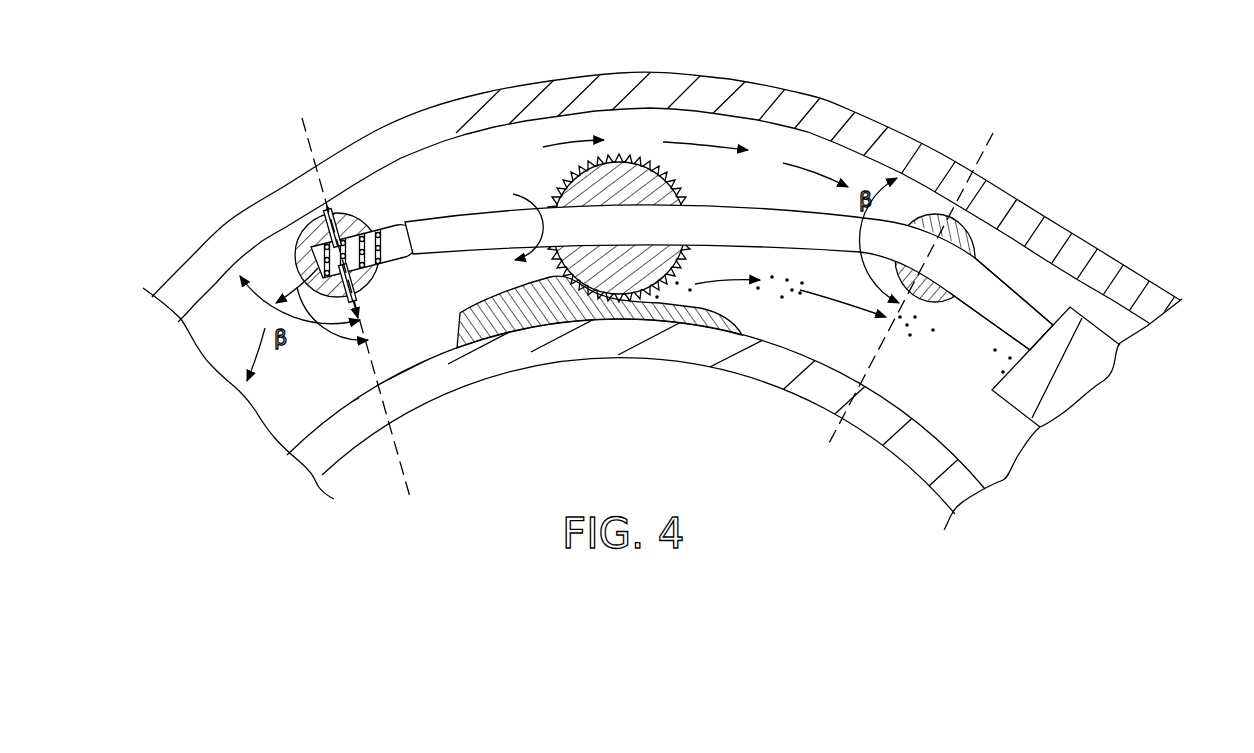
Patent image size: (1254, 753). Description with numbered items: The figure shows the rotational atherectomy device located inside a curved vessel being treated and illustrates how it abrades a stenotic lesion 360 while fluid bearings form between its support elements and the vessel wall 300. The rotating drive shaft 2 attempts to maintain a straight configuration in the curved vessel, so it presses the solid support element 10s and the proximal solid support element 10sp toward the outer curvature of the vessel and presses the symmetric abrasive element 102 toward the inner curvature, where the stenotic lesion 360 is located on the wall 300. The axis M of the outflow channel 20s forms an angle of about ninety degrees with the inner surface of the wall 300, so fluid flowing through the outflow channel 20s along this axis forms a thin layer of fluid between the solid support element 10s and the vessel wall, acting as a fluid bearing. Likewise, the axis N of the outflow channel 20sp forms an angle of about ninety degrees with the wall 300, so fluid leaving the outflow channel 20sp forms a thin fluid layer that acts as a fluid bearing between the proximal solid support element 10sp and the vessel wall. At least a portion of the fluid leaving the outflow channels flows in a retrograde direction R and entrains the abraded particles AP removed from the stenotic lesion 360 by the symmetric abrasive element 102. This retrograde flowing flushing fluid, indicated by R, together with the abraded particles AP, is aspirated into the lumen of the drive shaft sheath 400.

The wall of the treated vessel 300 is at (380, 133).
The symmetric abrasive element 102 is at (646, 146).
The stenotic lesion 360 is at (550, 300).
The drive shaft sheath 400 is at (997, 407).
The solid support element 10s is at (381, 287).
The outflow channel 20s is at (318, 232).
The outflow channel 20sp is at (931, 219).
The proximal solid support element 10sp is at (985, 251).
The drive shaft 2 is at (485, 203).
The abraded particles AP is at (790, 296).
The retrograde direction R is at (474, 166).
The axis of the outflow channel M is at (303, 119).
The axis of the outflow channel N is at (993, 133).